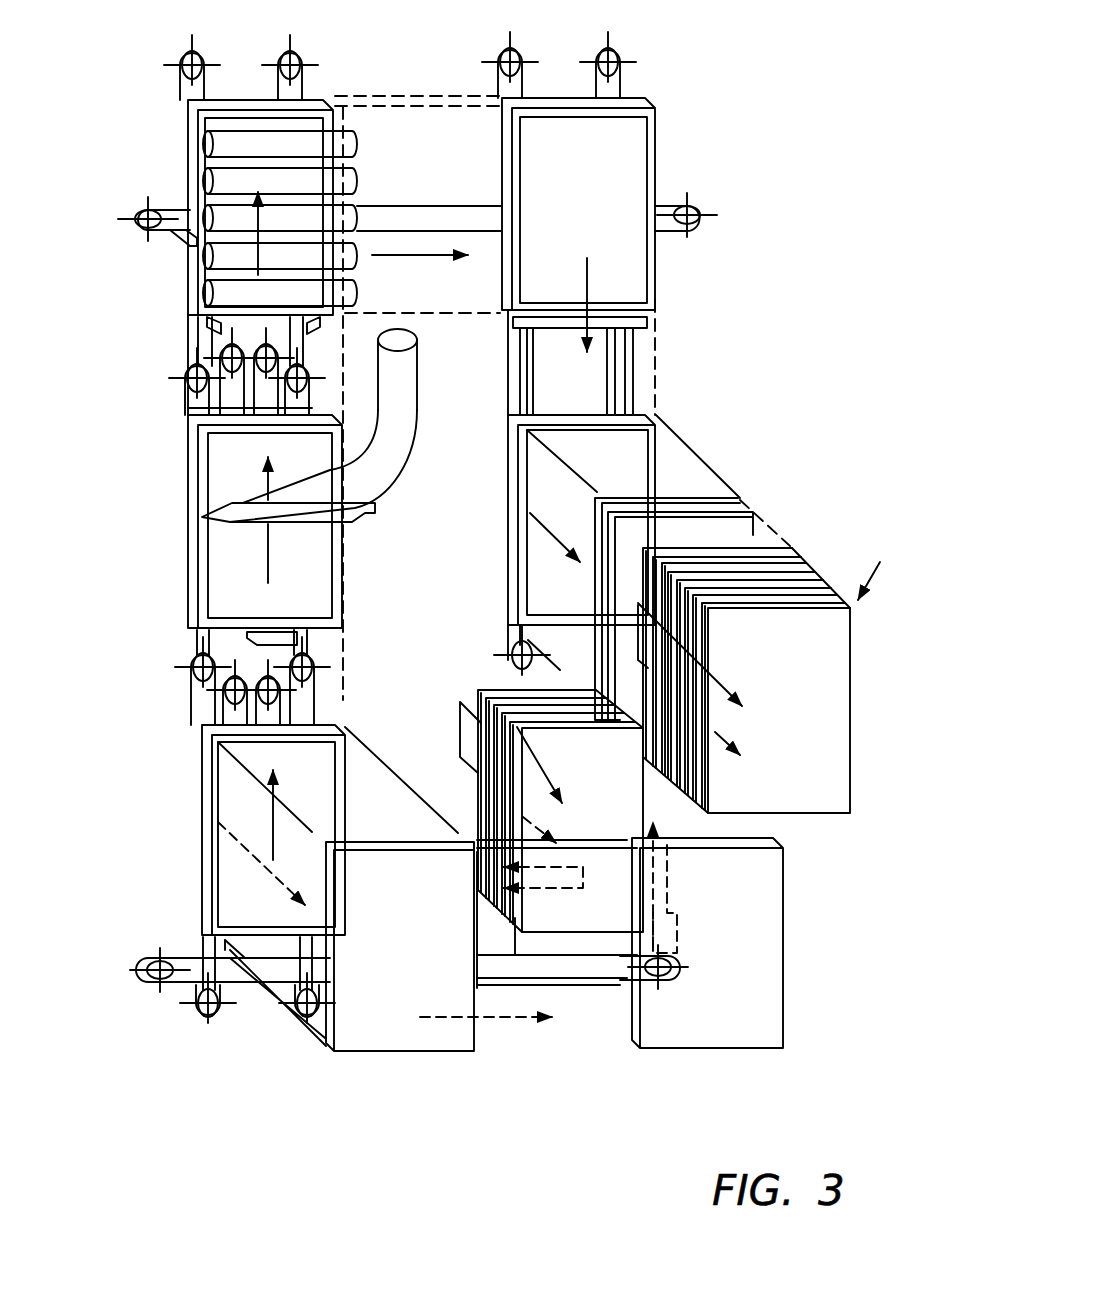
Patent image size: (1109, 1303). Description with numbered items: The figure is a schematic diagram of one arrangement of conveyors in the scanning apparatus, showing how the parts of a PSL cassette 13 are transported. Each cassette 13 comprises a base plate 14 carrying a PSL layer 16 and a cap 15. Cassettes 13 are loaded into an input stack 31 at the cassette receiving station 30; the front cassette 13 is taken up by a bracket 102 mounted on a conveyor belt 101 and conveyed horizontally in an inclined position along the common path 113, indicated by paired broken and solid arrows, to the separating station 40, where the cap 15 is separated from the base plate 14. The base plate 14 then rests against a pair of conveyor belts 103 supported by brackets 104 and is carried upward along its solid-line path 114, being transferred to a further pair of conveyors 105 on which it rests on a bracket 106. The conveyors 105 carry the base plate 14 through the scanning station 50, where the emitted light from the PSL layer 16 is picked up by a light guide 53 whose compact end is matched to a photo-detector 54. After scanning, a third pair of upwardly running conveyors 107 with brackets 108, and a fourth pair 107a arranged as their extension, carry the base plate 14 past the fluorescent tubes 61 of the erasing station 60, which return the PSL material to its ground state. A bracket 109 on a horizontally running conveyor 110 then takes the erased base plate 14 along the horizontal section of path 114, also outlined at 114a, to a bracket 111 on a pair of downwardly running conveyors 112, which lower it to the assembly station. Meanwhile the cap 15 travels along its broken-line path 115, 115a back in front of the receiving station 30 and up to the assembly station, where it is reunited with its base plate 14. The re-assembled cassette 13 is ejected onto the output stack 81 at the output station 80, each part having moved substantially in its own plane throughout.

The PSL cassette 13 is at (838, 712).
The base plate 14 is at (657, 130).
The cap 15 is at (755, 512).
The PSL layer 16 is at (647, 168).
The cassette receiving station 30 is at (680, 823).
The input stack 31 is at (472, 658).
The separating station 40 is at (178, 886).
The scanning station 50 is at (175, 560).
The light guide 53 is at (398, 481).
The photo-detector 54 is at (419, 370).
The erasing station 60 is at (272, 215).
The fluorescent tubes 61 is at (203, 180).
The output station 80 is at (805, 545).
The output stack 81 is at (880, 565).
The conveyor belt 101 is at (258, 993).
The bracket 102 is at (648, 982).
The pair of conveyor belts 103 is at (200, 695).
The brackets 104 is at (232, 950).
The further pair of conveyors 105 is at (210, 408).
The bracket 106 is at (277, 643).
The third pair of conveyors 107 is at (190, 365).
The fourth pair of conveyors 107a is at (276, 84).
The brackets 108 is at (208, 325).
The bracket 109 is at (175, 243).
The horizontally running conveyor 110 is at (433, 208).
The bracket 111 is at (640, 330).
The pair of downwardly running conveyors 112 is at (520, 90).
The path of the assembled cassette 113 is at (460, 728).
The path of the base plate 114 is at (430, 262).
The outline of horizontal path section 114a is at (403, 95).
The path of the cap 115 is at (488, 1020).
The cap path section 115a is at (596, 1065).